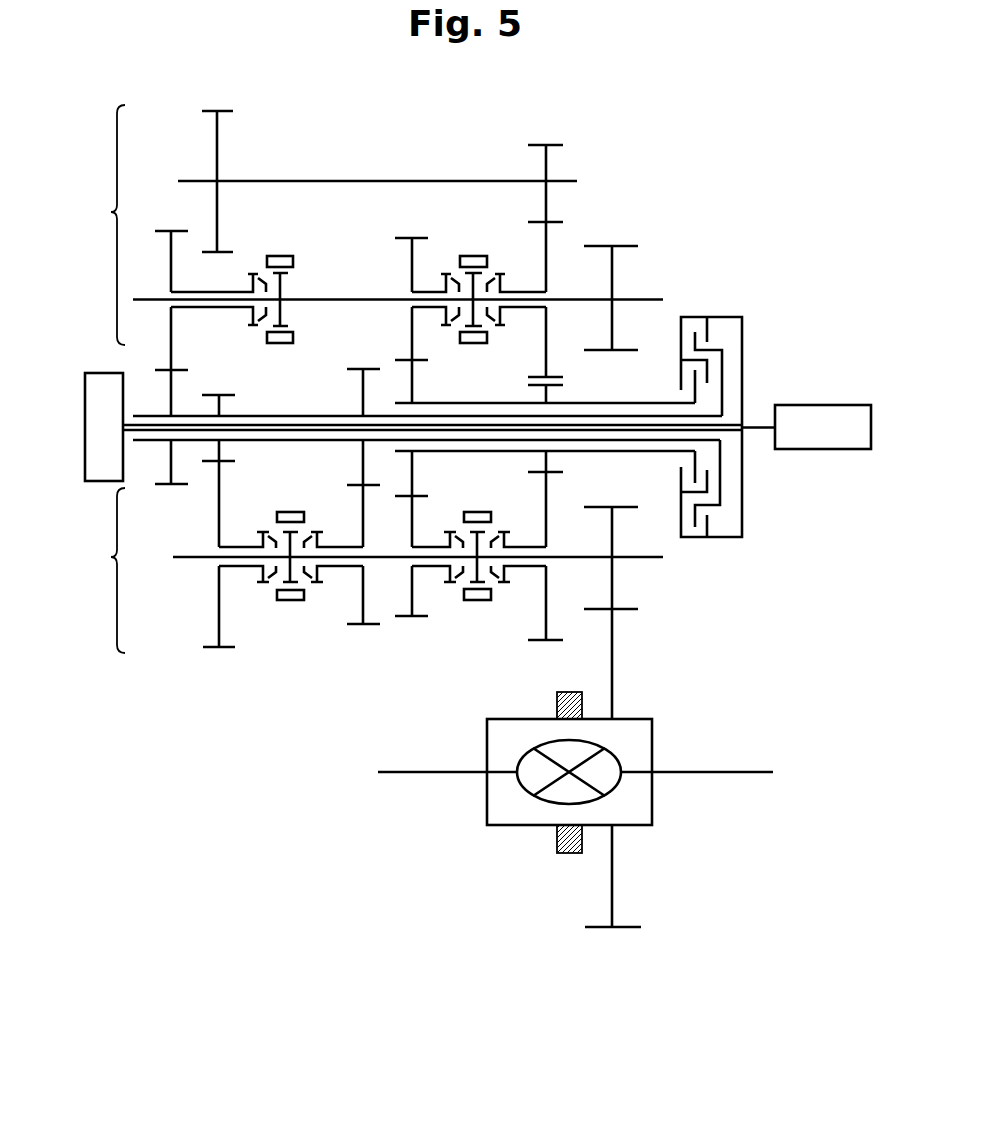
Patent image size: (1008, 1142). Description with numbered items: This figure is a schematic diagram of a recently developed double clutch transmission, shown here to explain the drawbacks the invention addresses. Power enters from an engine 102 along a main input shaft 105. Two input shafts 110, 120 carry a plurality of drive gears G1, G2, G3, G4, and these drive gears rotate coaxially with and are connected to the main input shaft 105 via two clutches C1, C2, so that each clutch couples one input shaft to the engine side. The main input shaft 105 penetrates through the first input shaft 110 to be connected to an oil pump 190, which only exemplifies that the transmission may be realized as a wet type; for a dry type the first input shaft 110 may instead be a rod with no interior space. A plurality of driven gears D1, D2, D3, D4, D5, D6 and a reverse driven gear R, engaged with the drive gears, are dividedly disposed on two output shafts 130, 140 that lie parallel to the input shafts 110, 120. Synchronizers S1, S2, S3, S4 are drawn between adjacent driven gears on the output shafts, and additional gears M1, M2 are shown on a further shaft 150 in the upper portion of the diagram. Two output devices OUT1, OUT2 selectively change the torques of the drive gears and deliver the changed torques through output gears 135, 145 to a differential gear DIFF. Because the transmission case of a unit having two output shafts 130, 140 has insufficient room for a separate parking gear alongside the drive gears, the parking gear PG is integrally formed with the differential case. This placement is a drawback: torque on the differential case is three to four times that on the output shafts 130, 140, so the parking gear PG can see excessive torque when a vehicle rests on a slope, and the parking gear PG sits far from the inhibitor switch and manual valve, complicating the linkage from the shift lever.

The engine 102 is at (832, 405).
The main input shaft 105 is at (637, 425).
The first input shaft 110 is at (288, 442).
The second input shaft 120 is at (623, 451).
The first output shaft 130 is at (372, 560).
The output gear of second output shaft 135 is at (614, 270).
The second output shaft 140 is at (338, 298).
The output gear / differential input gear 145 is at (614, 578).
The motor shaft 150 is at (339, 181).
The oil pump 190 is at (99, 373).
The motor gear 1 M1 is at (218, 130).
The motor gear 2 M2 is at (545, 160).
The reverse driven gear R is at (545, 235).
The driven gear D1 is at (219, 619).
The driven gear D2 is at (545, 616).
The driven gear D3 is at (363, 609).
The driven gear D4 is at (411, 604).
The driven gear D5 is at (171, 345).
The driven gear D6 is at (411, 252).
The drive gear G1 is at (229, 405).
The drive gear G2 is at (548, 396).
The drive gear G3 is at (362, 389).
The drive gear G4 is at (413, 381).
The first synchronizer S1 is at (291, 568).
The second synchronizer S2 is at (479, 568).
The third synchronizer S3 is at (232, 286).
The fourth synchronizer S4 is at (479, 287).
The clutch C1 is at (718, 366).
The clutch C2 is at (718, 331).
The parking gear PG is at (556, 840).
The differential gear DIFF is at (611, 238).
The output device OUT1 is at (94, 570).
The output device OUT2 is at (94, 225).